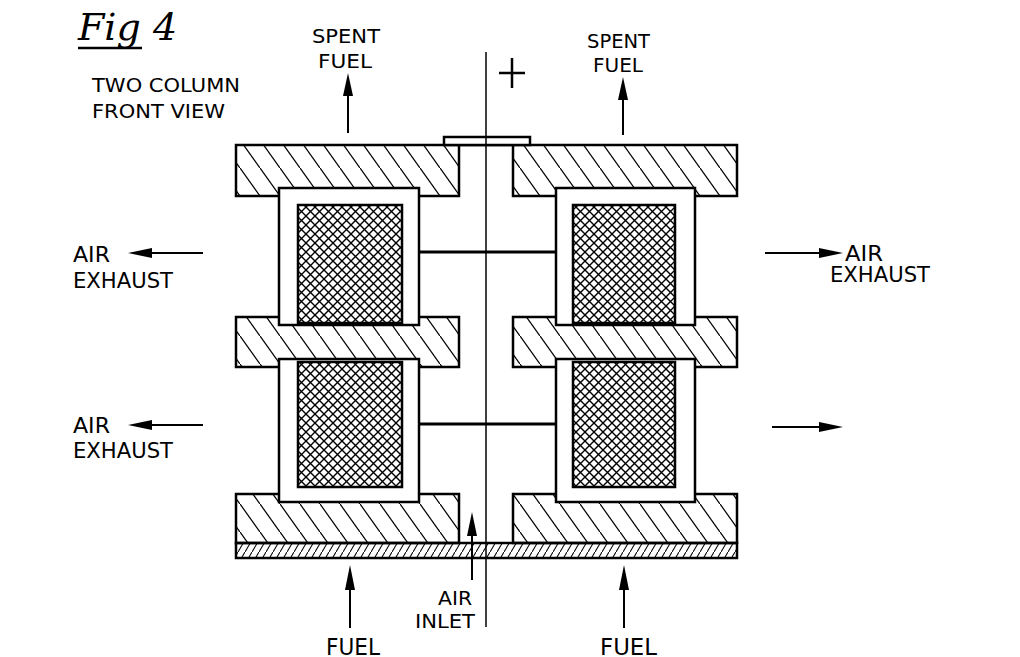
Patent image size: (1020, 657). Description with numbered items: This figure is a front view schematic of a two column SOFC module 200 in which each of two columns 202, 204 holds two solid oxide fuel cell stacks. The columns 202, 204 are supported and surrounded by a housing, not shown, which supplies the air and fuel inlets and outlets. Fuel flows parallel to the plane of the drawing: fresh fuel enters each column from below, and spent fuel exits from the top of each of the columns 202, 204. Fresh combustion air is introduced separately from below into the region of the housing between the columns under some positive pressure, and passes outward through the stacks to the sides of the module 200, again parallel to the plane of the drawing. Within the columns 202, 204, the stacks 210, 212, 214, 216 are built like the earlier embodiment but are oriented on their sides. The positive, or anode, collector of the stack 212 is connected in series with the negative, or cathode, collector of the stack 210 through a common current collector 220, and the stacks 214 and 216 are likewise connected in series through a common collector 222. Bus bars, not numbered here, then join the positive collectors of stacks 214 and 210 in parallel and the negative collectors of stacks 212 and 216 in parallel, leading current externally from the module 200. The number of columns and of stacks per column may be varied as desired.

The two column SOFC module 200 is at (776, 102).
The column 202 is at (695, 221).
The column 204 is at (279, 218).
The stack 210 is at (672, 295).
The stack 212 is at (665, 396).
The stack 214 is at (315, 293).
The stack 216 is at (312, 390).
The common current collector 220 is at (722, 342).
The common collector 222 is at (253, 345).